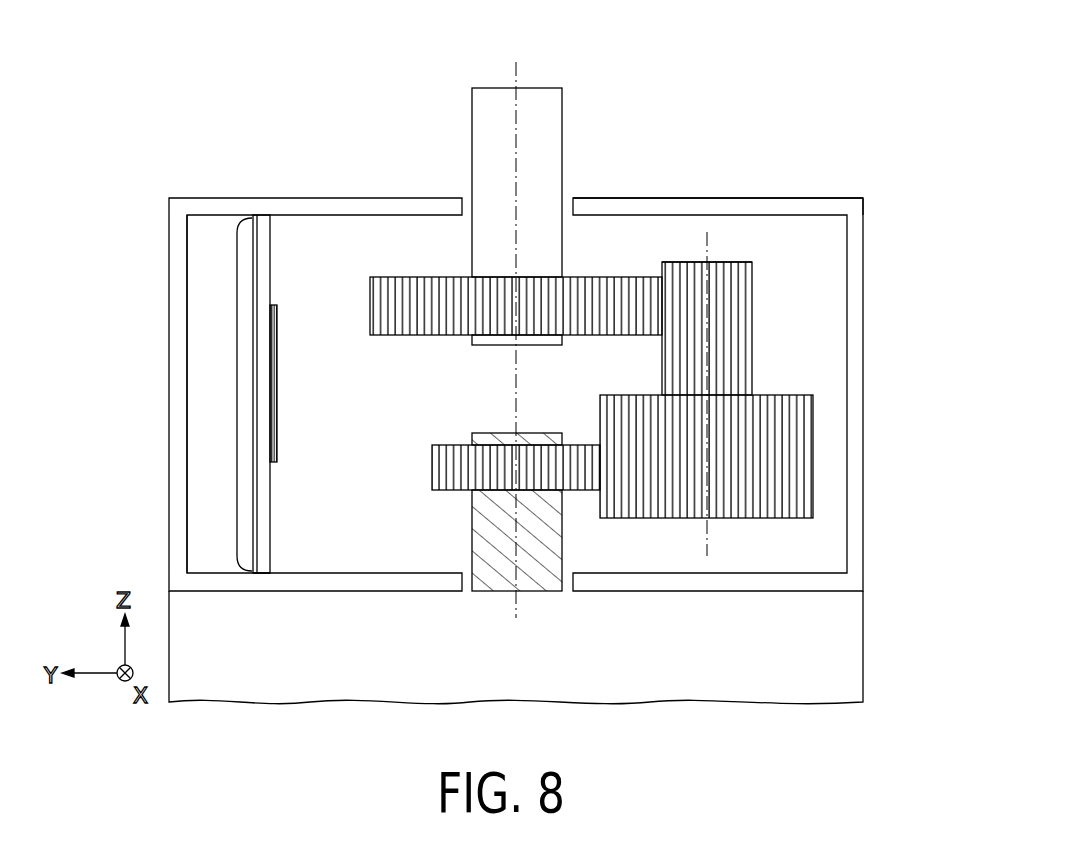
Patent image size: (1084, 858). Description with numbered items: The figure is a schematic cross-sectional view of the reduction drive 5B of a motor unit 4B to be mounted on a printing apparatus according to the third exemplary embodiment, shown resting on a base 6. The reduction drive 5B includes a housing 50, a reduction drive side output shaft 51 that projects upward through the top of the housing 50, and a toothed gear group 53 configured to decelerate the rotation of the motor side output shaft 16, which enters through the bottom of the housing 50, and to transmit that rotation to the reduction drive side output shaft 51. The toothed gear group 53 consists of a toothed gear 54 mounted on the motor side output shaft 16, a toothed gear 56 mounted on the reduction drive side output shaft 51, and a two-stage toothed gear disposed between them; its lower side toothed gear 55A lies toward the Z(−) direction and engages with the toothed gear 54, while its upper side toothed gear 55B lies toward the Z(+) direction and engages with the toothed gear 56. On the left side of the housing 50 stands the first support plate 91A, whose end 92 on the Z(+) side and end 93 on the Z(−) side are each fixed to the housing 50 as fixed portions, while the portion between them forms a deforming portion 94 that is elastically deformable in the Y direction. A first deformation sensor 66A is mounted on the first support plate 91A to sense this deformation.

The motor unit 4B is at (852, 174).
The reduction drive 5B is at (858, 252).
The base 6 is at (863, 645).
The motor side output shaft 16 is at (472, 508).
The housing 50 is at (652, 205).
The reduction drive side output shaft 51 is at (472, 120).
The toothed gear group 53 is at (752, 240).
The toothed gear 54 is at (432, 463).
The lower side toothed gear 55A is at (813, 462).
The upper side toothed gear 55B is at (752, 342).
The toothed gear 56 is at (370, 283).
The first deformation sensor 66A is at (277, 398).
The first support plate 91A is at (187, 403).
The end 92 is at (263, 212).
The end 93 is at (263, 573).
The deforming portion 94 is at (224, 396).